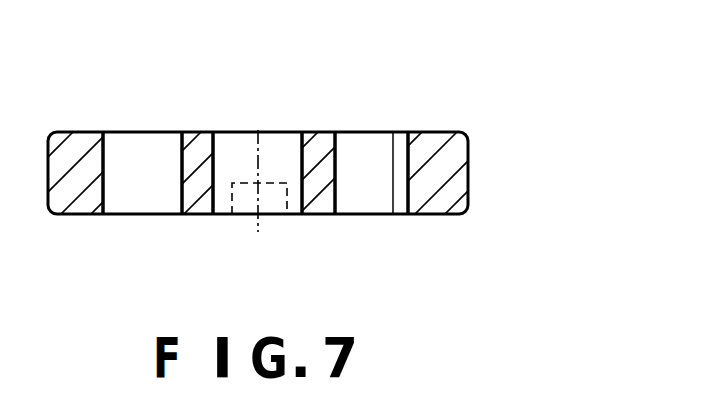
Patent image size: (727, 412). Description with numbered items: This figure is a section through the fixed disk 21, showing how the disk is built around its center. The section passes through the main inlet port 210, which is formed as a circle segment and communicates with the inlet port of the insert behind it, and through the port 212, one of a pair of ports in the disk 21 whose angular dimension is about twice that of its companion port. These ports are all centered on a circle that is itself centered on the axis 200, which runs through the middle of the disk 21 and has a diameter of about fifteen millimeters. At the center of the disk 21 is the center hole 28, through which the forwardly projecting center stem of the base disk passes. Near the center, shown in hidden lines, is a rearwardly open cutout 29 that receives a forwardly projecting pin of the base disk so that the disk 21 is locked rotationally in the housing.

The fixed disk 21 is at (492, 150).
The port 212 is at (152, 146).
The axis 200 is at (257, 128).
The center hole 28 is at (280, 150).
The main inlet port 210 is at (377, 144).
The cutout 29 is at (285, 197).